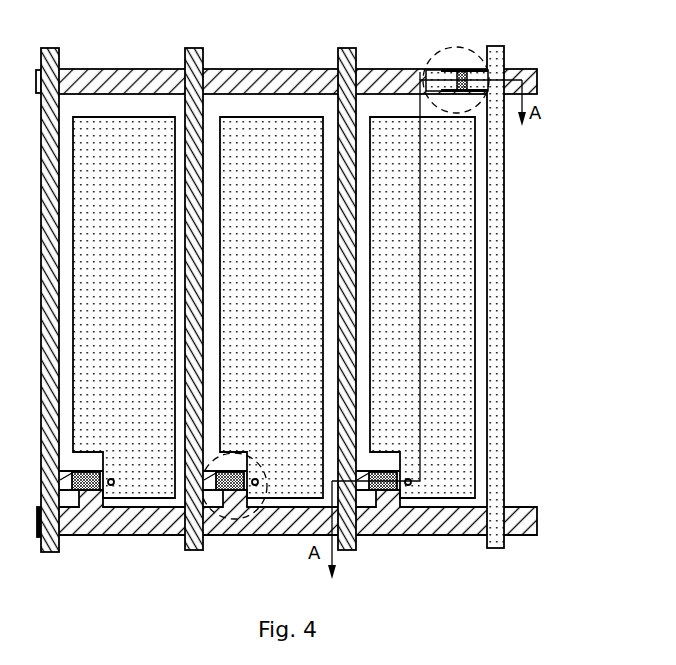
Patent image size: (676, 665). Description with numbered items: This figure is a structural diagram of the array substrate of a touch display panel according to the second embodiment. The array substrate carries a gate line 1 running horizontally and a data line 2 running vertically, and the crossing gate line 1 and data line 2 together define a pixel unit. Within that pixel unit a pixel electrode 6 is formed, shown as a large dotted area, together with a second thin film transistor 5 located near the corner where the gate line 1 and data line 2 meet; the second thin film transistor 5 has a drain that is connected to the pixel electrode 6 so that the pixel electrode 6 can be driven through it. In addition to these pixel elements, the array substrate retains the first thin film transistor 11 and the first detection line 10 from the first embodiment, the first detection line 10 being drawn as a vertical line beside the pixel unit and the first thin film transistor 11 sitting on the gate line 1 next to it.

The gate line 1 is at (538, 70).
The data line 2 is at (353, 52).
The second thin film transistor 5 is at (262, 505).
The pixel electrode 6 is at (462, 318).
The first detection line 10 is at (497, 194).
The first thin film transistor 11 is at (470, 47).